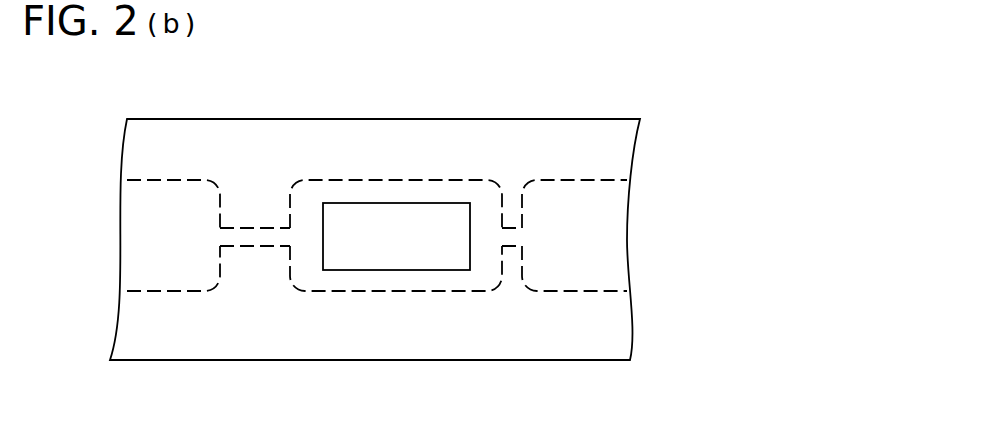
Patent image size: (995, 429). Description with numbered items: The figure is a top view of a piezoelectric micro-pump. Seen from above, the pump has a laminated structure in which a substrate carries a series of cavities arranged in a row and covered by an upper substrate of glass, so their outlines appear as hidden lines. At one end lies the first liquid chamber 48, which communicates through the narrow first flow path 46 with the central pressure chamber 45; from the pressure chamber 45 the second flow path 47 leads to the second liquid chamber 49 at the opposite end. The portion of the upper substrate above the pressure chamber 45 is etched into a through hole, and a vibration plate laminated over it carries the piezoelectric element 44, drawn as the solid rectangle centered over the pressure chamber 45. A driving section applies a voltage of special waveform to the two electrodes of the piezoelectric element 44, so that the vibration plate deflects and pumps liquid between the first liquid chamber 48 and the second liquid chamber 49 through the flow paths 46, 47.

The piezoelectric element 44 is at (390, 203).
The pressure chamber 45 is at (393, 280).
The first flow path 46 is at (510, 233).
The second flow path 47 is at (254, 232).
The first liquid chamber 48 is at (602, 240).
The second liquid chamber 49 is at (165, 210).